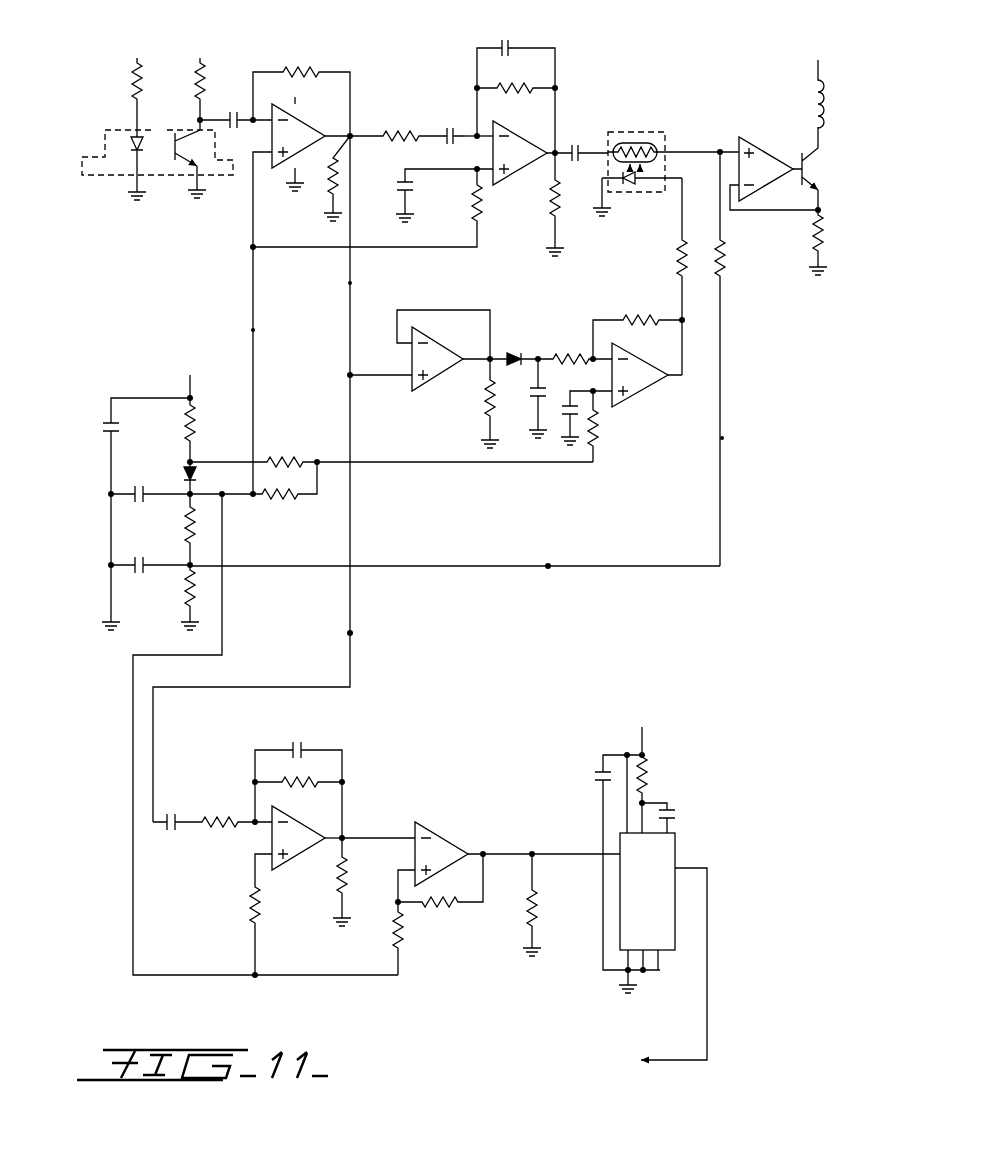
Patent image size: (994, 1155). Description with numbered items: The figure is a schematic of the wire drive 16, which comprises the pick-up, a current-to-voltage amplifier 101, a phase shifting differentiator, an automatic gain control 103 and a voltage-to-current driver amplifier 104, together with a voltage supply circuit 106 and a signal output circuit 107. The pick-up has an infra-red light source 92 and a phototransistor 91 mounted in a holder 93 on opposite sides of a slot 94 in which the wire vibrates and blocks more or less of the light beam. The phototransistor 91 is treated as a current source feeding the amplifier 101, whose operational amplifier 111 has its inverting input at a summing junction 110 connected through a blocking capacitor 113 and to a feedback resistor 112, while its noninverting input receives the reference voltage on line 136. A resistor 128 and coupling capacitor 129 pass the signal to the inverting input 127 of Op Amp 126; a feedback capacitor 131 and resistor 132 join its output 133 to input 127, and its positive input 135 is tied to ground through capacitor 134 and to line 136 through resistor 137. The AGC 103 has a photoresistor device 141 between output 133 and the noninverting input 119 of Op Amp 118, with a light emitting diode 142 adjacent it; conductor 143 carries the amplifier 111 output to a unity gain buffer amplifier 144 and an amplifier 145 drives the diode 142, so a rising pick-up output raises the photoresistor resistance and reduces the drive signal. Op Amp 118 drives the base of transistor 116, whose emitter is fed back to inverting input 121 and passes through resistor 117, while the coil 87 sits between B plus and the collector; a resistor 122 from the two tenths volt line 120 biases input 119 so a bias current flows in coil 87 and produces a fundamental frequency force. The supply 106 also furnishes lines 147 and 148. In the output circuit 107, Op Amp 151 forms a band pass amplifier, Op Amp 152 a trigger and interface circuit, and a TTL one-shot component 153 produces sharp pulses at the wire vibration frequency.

The wire drive 16 is at (723, 156).
The coil 87 is at (826, 100).
The phototransistor 91 is at (170, 158).
The light source 92 is at (133, 138).
The holder 93 is at (98, 172).
The slot 94 is at (147, 140).
The current-to-voltage amplifier 101 is at (285, 116).
The automatic gain control 103 is at (633, 153).
The voltage-to-current driver amplifier 104 is at (760, 128).
The voltage supply circuit 106 is at (122, 393).
The signal output circuit 107 is at (481, 860).
The summing junction 110 is at (252, 117).
The operational amplifier 111 is at (278, 106).
The feedback resistor 112 is at (302, 70).
The blocking capacitor 113 is at (225, 117).
The transistor 116 is at (812, 163).
The resistor 117 is at (826, 250).
The Op Amp 118 is at (775, 188).
The noninverting input 119 is at (728, 150).
The 0.2 volt line 120 is at (722, 438).
The inverting input 121 is at (728, 187).
The resistor 122 is at (722, 272).
The Op Amp 126 is at (532, 140).
The inverting input 127 is at (482, 140).
The resistor 128 is at (388, 133).
The coupling capacitor 129 is at (447, 128).
The feedback capacitor 131 is at (508, 42).
The resistor 132 is at (522, 86).
The output 133 is at (560, 150).
The capacitor 134 is at (400, 183).
The positive input 135 is at (485, 172).
The bias voltage line 136 is at (252, 330).
The resistor 137 is at (470, 195).
The photoresistor device 141 is at (630, 142).
The light emitting diode 142 is at (627, 182).
The conductor 143 is at (346, 284).
The unity gain buffer amplifier 144 is at (437, 373).
The operational amplifier 145 is at (640, 385).
The line 147 is at (507, 463).
The line 148 is at (548, 566).
The Op Amp 151 is at (270, 835).
The Op Amp 152 is at (432, 835).
The TTL logic one-shot component 153 is at (670, 845).